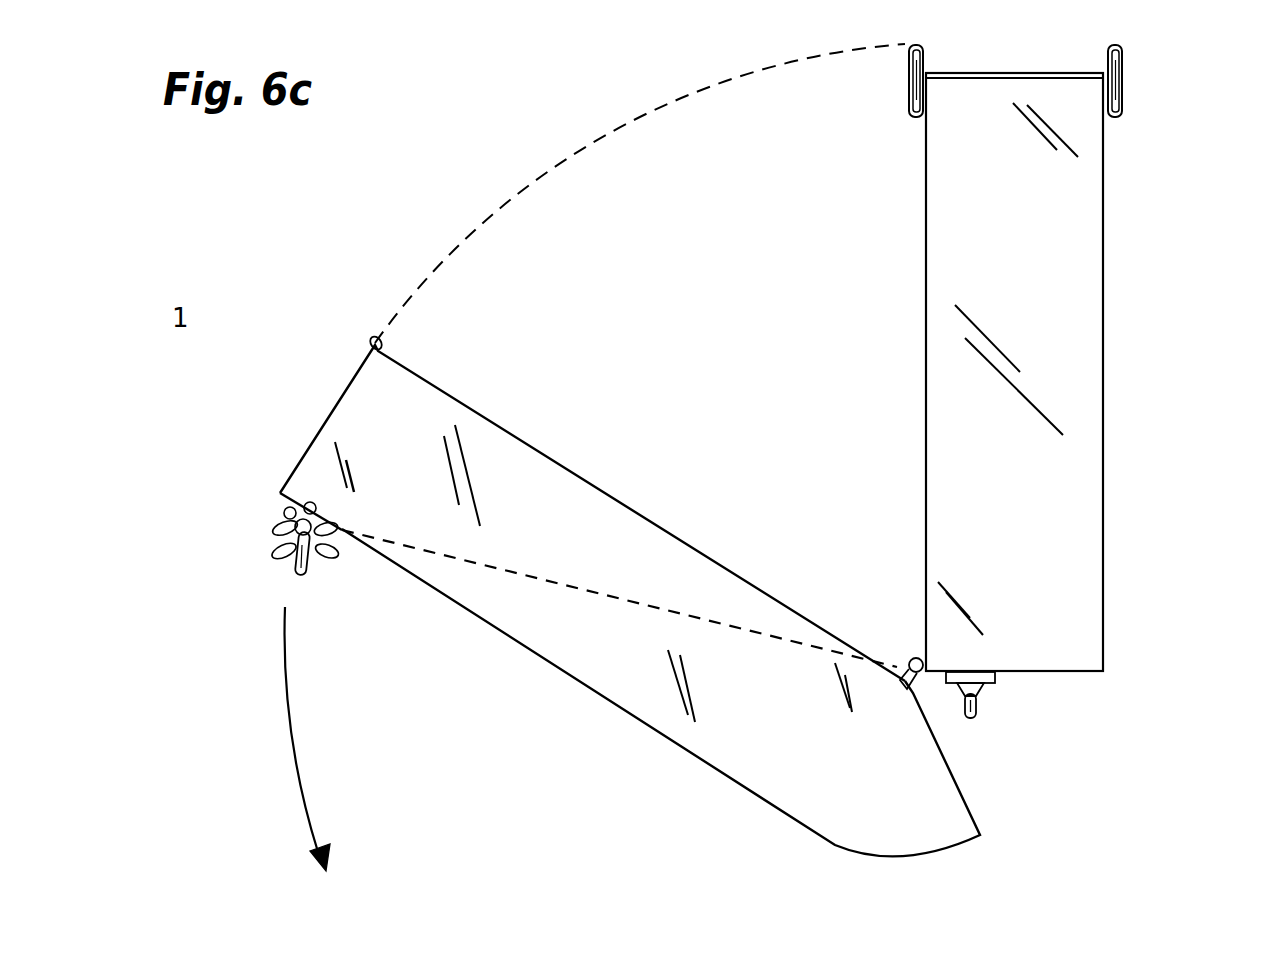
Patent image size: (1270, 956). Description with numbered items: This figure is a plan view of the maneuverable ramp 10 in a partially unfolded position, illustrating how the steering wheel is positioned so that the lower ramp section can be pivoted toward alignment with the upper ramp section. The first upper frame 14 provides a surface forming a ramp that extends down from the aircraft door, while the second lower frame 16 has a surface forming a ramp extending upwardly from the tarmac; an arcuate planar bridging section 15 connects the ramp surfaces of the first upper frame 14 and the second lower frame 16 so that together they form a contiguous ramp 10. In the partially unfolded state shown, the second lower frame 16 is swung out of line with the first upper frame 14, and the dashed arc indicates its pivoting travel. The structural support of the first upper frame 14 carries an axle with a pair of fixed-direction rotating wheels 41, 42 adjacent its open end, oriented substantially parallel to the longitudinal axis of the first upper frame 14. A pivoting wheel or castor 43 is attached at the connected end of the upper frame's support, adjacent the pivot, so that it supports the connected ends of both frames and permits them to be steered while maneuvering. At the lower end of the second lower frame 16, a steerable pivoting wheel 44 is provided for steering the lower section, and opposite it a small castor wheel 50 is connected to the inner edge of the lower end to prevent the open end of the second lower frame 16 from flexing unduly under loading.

The maneuverable ramp 10 is at (1120, 308).
The first upper frame 14 is at (1015, 372).
The arcuate planar bridging section 15 is at (661, 692).
The second lower frame 16 is at (592, 513).
The fixed-direction rotating wheel 41 is at (1124, 78).
The fixed-direction rotating wheel 42 is at (907, 85).
The pivoting wheel or castor 43 is at (980, 700).
The steerable pivoting wheel 44 is at (311, 563).
The small castor wheel 50 is at (383, 342).